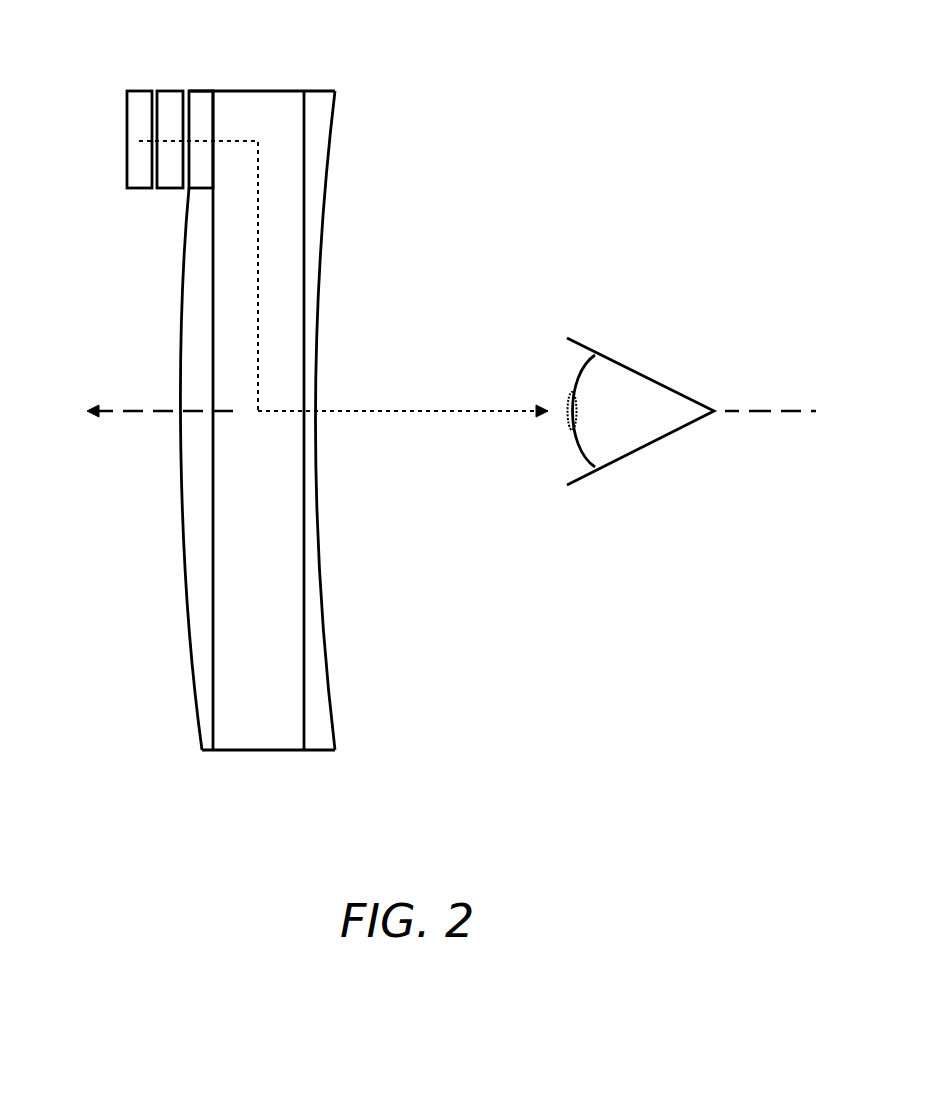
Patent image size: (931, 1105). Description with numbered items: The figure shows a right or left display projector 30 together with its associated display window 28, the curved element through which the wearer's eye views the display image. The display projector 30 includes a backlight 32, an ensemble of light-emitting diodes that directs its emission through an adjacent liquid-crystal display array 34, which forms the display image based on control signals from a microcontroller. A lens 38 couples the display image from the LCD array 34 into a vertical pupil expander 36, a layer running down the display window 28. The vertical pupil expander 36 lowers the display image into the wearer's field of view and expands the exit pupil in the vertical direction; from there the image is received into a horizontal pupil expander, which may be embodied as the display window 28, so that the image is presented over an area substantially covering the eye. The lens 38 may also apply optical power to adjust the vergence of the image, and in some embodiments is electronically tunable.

The display window 28 is at (188, 628).
The display projector 30 is at (438, 170).
The backlight 32 is at (127, 141).
The liquid-crystal display (LCD) array 34 is at (172, 91).
The vertical pupil expander 36 is at (258, 420).
The lens 38 is at (202, 91).